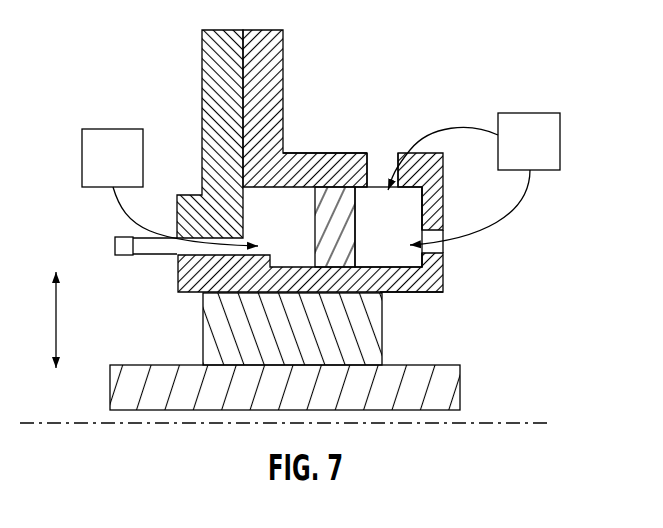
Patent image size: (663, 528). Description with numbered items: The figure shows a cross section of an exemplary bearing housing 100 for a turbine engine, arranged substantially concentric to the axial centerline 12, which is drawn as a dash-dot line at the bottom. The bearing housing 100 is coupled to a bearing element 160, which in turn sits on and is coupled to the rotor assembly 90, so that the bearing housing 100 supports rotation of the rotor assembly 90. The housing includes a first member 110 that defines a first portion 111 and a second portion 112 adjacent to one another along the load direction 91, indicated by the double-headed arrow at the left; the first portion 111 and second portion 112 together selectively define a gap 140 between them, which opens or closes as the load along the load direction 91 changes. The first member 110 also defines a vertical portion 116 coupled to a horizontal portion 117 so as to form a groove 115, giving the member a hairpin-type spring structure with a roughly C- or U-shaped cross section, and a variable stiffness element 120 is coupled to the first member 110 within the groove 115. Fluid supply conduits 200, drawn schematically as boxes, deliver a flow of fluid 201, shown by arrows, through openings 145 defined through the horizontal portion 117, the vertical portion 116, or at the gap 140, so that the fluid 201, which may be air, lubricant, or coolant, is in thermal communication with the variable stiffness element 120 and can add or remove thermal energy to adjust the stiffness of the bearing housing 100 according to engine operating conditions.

The bearing housing 100 is at (324, 208).
The first member 110 is at (327, 177).
The first portion 111 is at (178, 273).
The second portion 112 is at (185, 193).
The groove 115 is at (400, 206).
The vertical portion 116 is at (445, 262).
The horizontal portion 117 is at (322, 152).
The variable stiffness element 120 is at (326, 216).
The gap 140 is at (115, 247).
The opening 145 is at (378, 148).
The bearing element 160 is at (203, 318).
The rotor assembly 90 is at (470, 387).
The load direction 91 is at (57, 320).
The axial centerline 12 is at (512, 423).
The fluid supply conduit 200 is at (130, 176).
The flow of fluid 201 is at (115, 213).